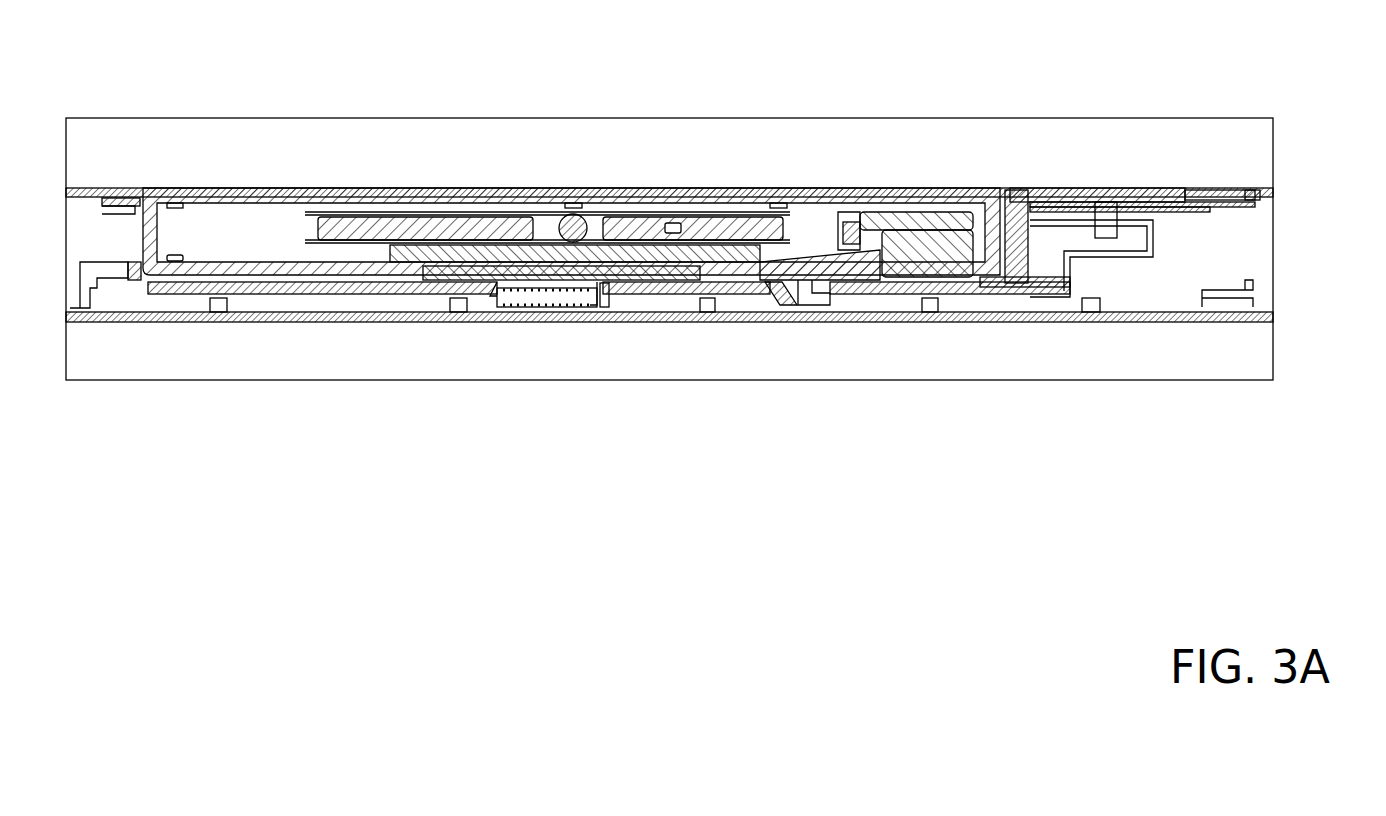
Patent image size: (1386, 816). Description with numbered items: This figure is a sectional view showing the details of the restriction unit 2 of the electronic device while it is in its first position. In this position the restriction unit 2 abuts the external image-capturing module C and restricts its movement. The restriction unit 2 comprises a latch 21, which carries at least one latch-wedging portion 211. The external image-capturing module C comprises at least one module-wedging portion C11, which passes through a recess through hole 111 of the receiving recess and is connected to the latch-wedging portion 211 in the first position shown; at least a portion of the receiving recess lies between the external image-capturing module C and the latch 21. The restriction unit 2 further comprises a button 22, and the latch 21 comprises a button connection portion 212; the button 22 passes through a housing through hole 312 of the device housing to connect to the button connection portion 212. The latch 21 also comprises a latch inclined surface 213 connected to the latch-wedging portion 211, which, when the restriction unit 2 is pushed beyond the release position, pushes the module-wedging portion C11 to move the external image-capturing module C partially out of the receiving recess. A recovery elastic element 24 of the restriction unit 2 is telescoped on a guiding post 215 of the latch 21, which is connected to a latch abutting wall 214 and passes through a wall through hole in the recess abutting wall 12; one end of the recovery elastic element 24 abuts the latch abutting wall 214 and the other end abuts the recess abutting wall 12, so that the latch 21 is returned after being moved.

The external image-capturing module C is at (232, 192).
The module-wedging portion C11 is at (823, 302).
The restriction unit 2 is at (1139, 245).
The latch 21 is at (1008, 296).
The latch-wedging portion 211 is at (880, 292).
The button connection portion 212 is at (1150, 222).
The latch inclined surface 213 is at (763, 298).
The latch abutting wall 214 is at (496, 296).
The guiding post 215 is at (585, 296).
The button 22 is at (1175, 190).
The recovery elastic element 24 is at (517, 306).
The recess abutting wall 12 is at (600, 294).
The recess through hole 111 is at (781, 286).
The housing through hole 312 is at (1063, 196).